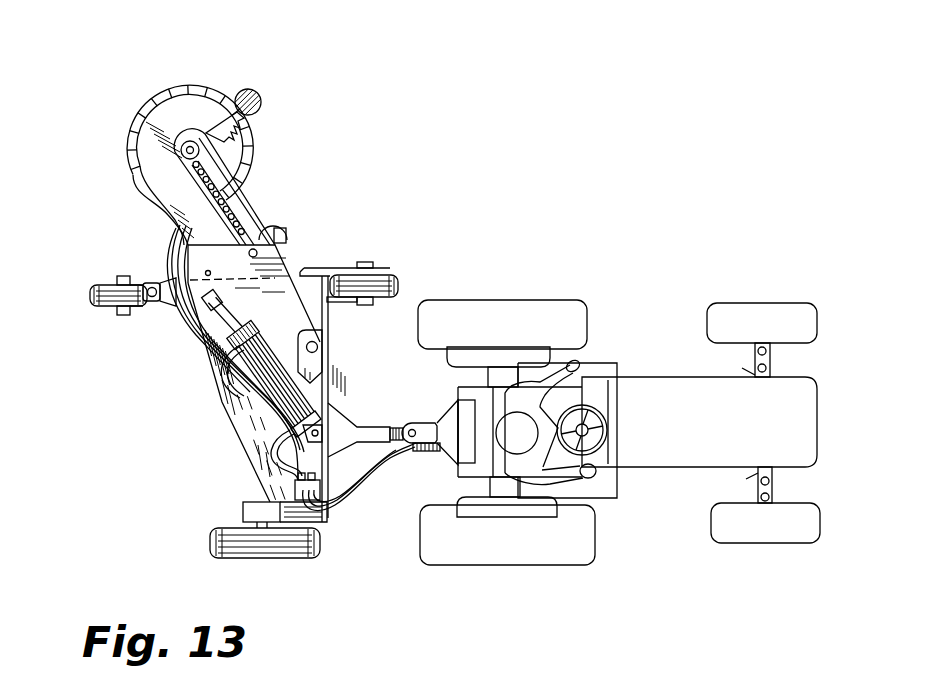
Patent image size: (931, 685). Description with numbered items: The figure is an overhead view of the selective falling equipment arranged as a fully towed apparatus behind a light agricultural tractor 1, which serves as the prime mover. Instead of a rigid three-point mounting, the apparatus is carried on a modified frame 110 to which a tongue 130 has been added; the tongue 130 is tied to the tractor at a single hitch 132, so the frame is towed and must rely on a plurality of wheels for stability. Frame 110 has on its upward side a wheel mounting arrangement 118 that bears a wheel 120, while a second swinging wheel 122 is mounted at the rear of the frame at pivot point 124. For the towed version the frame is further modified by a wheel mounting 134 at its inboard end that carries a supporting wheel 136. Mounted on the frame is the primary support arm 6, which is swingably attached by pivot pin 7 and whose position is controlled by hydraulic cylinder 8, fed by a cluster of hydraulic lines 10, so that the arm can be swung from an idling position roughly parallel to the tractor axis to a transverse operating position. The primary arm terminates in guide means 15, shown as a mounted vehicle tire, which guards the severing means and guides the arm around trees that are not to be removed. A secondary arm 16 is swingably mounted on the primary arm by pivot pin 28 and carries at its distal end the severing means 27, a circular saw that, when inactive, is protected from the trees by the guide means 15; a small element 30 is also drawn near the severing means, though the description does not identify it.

The tractor 1 is at (651, 350).
The primary support arm 6 is at (281, 264).
The pivot pin 7 is at (303, 330).
The hydraulic cylinder 8 is at (280, 397).
The cluster of lines 10 is at (200, 375).
The guide means 15 is at (164, 90).
The secondary arm 16 is at (247, 198).
The severing means 27 is at (220, 152).
The pivot pin 28 is at (249, 255).
The knob 30 is at (262, 100).
The frame 110 is at (243, 450).
The wheel mounting arrangement 118 is at (340, 267).
The wheel 120 is at (388, 273).
The swinging wheel 122 is at (92, 303).
The pivot point 124 is at (148, 303).
The tongue 130 is at (393, 427).
The hitch 132 is at (412, 425).
The wheel mounting 134 is at (243, 508).
The supporting wheel 136 is at (253, 556).